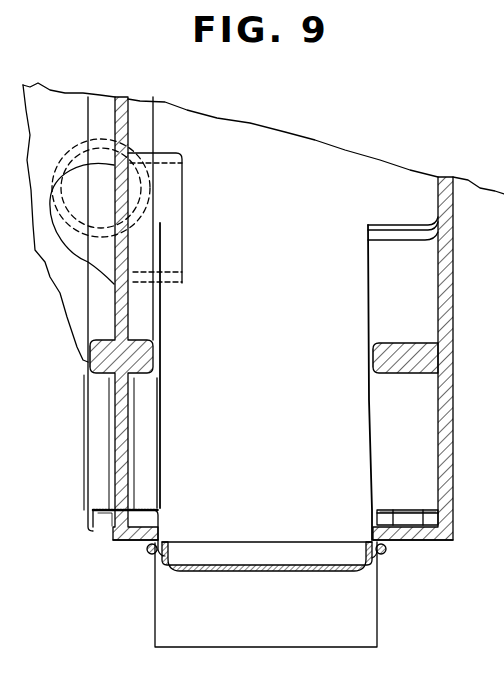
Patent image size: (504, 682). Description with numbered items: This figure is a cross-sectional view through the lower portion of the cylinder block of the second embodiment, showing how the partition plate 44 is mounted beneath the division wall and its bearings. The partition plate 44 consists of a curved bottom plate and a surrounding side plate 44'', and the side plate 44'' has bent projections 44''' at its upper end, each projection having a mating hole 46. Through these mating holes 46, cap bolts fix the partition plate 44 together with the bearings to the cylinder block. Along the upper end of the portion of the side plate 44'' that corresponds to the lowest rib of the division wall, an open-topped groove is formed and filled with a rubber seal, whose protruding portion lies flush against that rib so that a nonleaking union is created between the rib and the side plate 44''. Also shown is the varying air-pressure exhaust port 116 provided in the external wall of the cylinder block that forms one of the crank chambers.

The varying air-pressure exhaust port 116 is at (78, 143).
The mating hole 46 is at (92, 528).
The partition plate 44 is at (303, 599).
The side plate 44'' is at (377, 524).
The bent projection 44''' is at (69, 500).